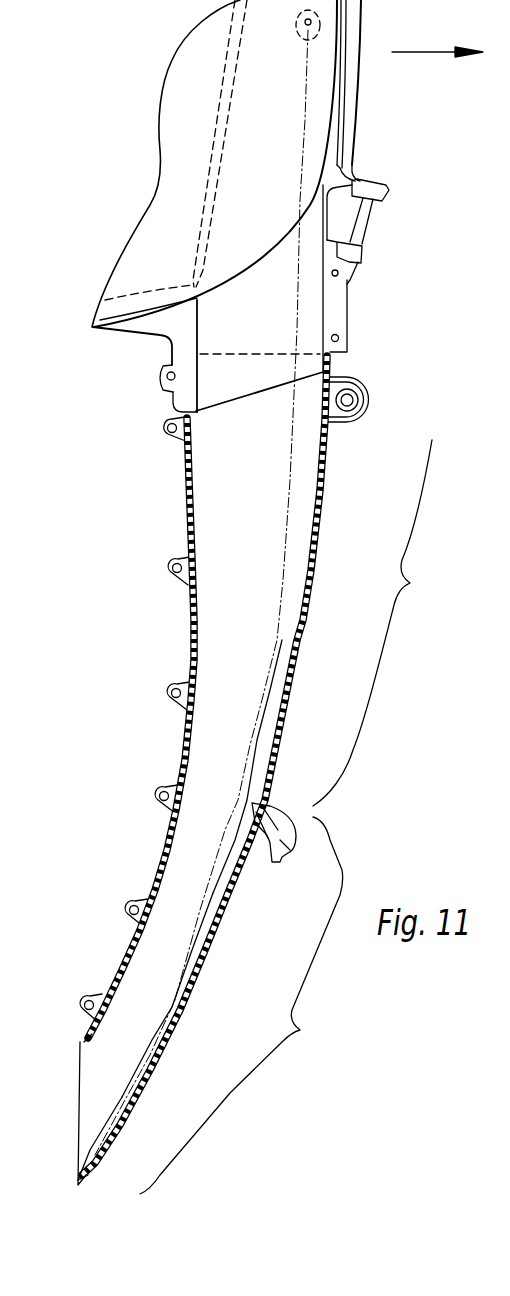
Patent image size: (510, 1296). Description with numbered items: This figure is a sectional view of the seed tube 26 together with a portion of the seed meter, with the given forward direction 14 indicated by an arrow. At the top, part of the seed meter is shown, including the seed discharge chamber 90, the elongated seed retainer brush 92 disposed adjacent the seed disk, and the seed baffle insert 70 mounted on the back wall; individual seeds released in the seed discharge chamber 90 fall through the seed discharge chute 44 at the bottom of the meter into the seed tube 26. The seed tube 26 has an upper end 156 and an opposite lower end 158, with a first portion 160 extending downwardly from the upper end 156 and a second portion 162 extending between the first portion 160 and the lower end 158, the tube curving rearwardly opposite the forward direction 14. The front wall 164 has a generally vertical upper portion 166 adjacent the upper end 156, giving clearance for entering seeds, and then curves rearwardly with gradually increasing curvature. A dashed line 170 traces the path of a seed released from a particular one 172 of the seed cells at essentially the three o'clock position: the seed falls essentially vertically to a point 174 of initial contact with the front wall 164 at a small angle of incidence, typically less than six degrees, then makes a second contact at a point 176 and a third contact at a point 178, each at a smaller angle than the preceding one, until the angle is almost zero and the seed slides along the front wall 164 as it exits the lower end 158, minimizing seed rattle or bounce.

The given forward direction 14 is at (427, 50).
The seed tube 26 is at (201, 770).
The seed discharge chute 44 is at (223, 383).
The seed baffle insert 70 is at (69, 1160).
The seed discharge chamber 90 is at (268, 108).
The seed retainer brush 92 is at (224, 161).
The upper end 156 is at (335, 372).
The lower end 158 is at (107, 1175).
The first portion 160 is at (385, 623).
The second portion 162 is at (244, 1005).
The front wall 164 is at (312, 526).
The upper portion 166 is at (317, 402).
The dashed line 170 is at (296, 300).
The particular one of the seed cells 172 is at (306, 30).
The point of initial contact 174 is at (297, 642).
The point of second contact 176 is at (240, 892).
The point of third contact 178 is at (197, 992).